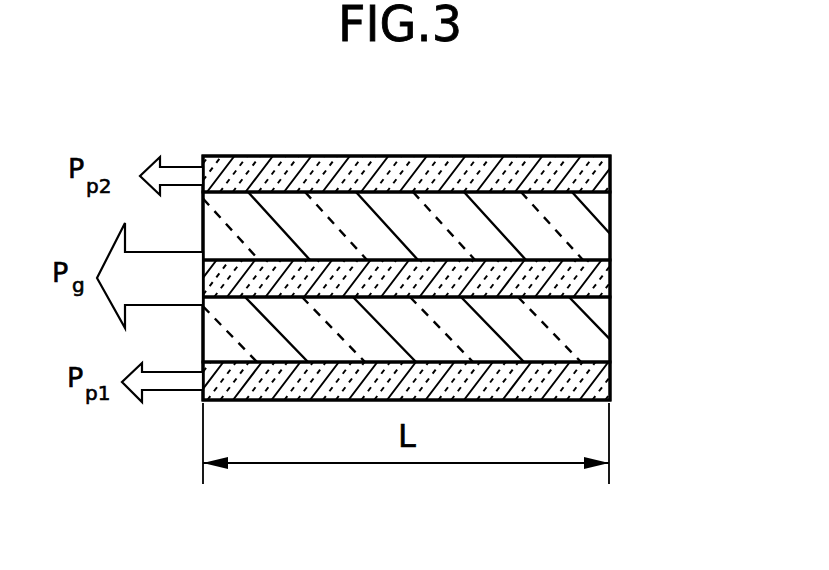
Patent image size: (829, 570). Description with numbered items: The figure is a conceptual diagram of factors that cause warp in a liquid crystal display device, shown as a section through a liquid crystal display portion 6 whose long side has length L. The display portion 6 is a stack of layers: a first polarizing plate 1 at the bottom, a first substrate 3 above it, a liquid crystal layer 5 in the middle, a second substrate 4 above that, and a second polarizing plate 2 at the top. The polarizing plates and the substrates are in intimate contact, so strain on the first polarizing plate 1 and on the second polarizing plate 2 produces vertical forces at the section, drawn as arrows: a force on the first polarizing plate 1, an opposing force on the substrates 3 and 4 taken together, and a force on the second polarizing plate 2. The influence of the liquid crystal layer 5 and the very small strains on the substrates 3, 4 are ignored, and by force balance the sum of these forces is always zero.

The first polarizing plate 1 is at (610, 377).
The second polarizing plate 2 is at (610, 177).
The first substrate 3 is at (610, 330).
The second substrate 4 is at (610, 226).
The liquid crystal layer 5 is at (610, 277).
The liquid crystal display portion 6 is at (702, 147).